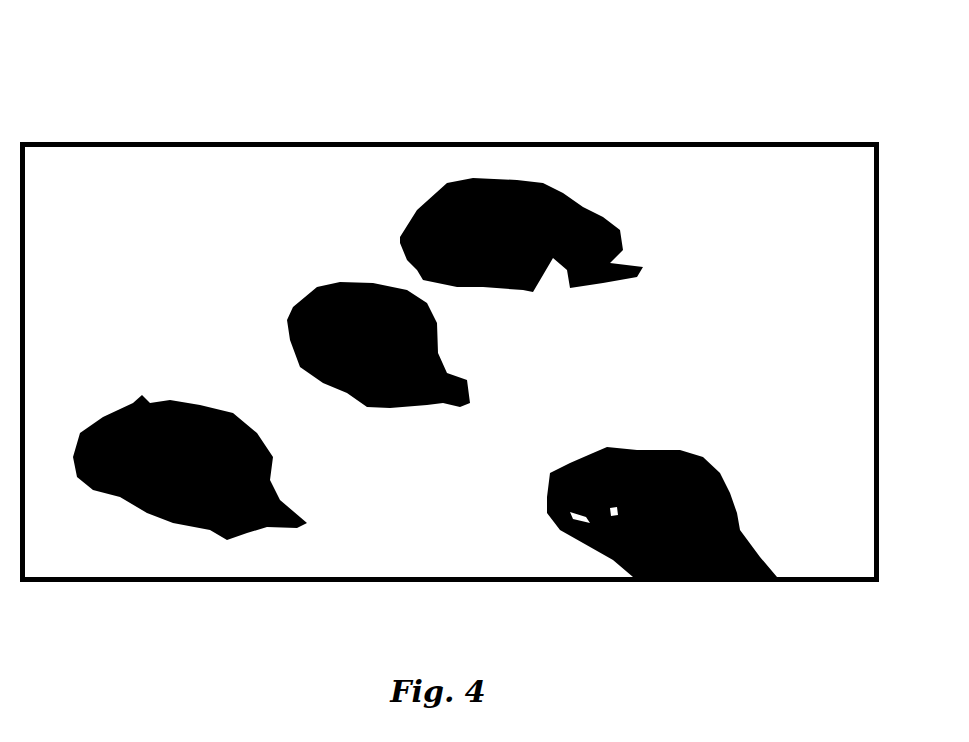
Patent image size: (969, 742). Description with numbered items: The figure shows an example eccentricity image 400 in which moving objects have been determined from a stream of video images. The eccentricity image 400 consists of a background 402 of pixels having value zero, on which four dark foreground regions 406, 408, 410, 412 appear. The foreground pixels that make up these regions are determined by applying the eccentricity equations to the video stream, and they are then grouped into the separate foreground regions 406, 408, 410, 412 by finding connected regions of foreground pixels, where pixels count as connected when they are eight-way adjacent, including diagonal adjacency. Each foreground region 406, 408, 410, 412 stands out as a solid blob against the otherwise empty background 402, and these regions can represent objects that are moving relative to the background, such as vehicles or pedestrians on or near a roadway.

The eccentricity image 400 is at (458, 44).
The background 402 is at (367, 540).
The foreground region 406 is at (117, 498).
The foreground region 408 is at (459, 400).
The foreground region 410 is at (738, 523).
The foreground region 412 is at (582, 203).